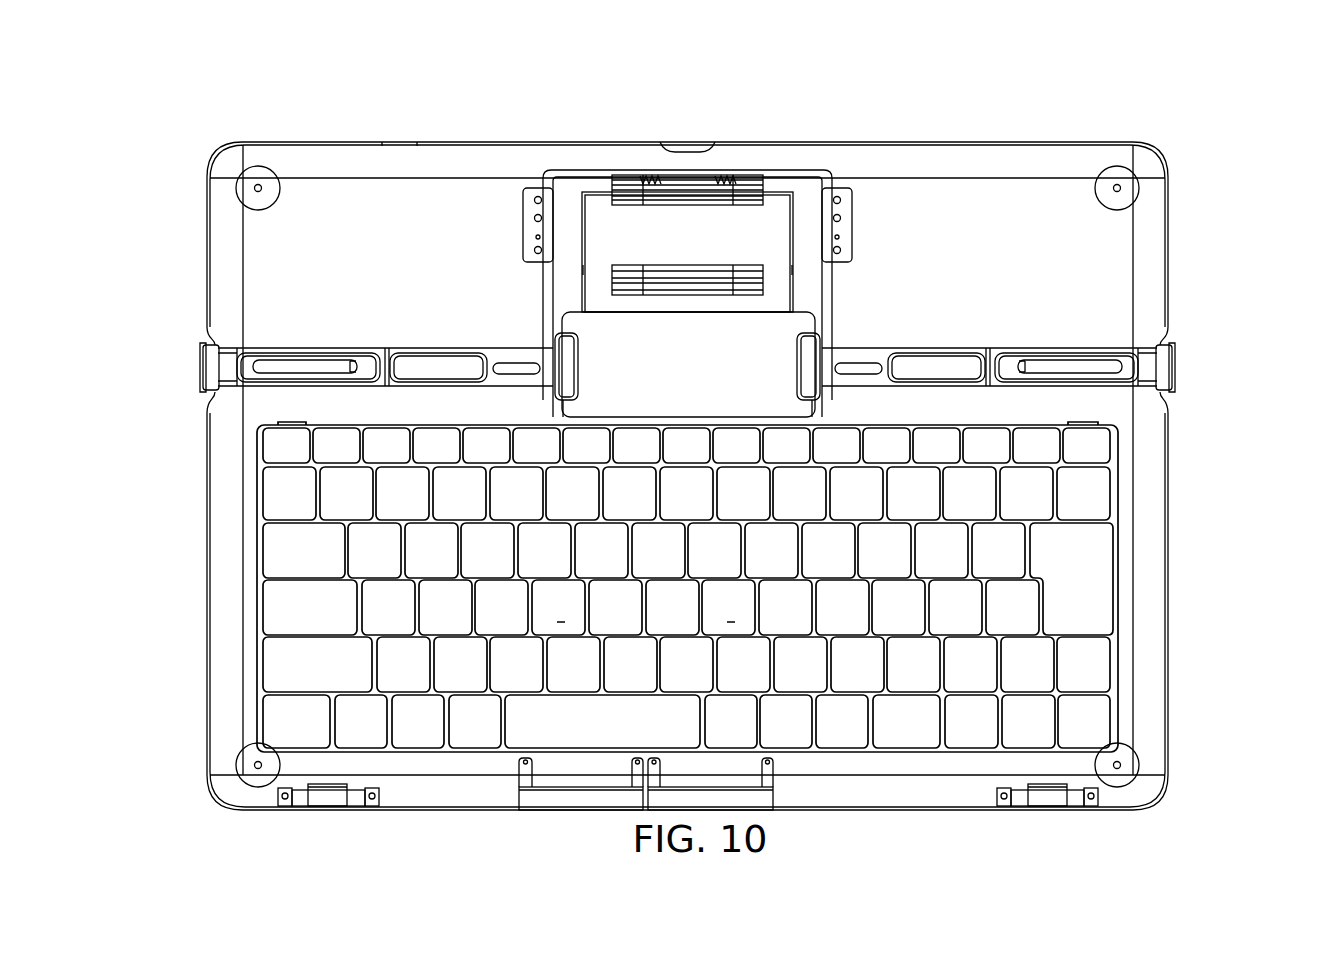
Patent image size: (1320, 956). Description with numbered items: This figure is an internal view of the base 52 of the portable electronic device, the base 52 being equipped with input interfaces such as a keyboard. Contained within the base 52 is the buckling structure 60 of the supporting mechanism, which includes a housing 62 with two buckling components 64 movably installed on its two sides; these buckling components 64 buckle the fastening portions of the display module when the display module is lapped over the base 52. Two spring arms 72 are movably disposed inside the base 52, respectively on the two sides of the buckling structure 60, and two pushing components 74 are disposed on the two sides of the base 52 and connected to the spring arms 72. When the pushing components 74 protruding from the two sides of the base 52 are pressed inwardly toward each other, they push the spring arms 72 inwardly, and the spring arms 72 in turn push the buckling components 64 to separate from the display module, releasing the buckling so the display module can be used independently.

The base 52 is at (1206, 116).
The buckling structure 60 is at (820, 103).
The housing 62 is at (690, 346).
The buckling components 64 is at (570, 352).
The spring arm 72 is at (325, 352).
The pushing component 74 is at (209, 367).